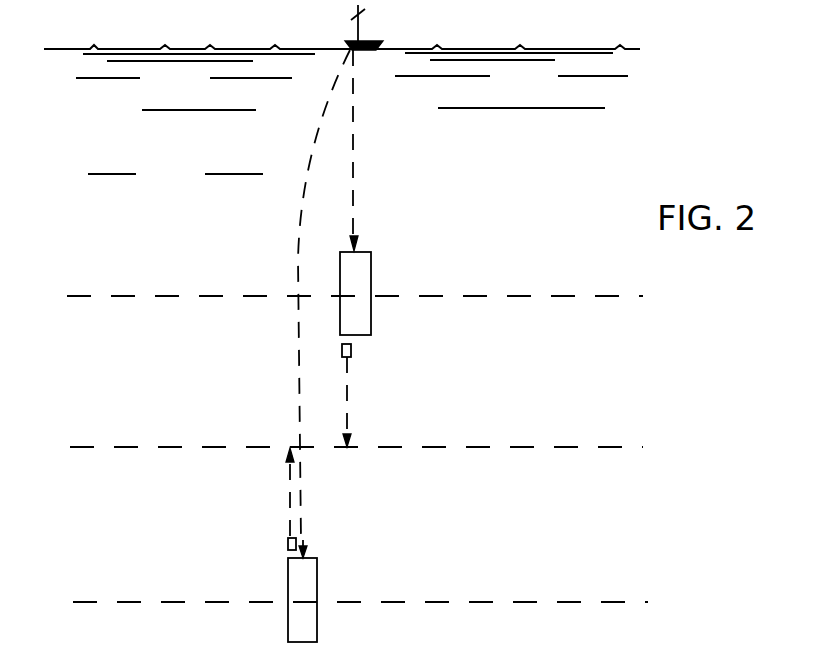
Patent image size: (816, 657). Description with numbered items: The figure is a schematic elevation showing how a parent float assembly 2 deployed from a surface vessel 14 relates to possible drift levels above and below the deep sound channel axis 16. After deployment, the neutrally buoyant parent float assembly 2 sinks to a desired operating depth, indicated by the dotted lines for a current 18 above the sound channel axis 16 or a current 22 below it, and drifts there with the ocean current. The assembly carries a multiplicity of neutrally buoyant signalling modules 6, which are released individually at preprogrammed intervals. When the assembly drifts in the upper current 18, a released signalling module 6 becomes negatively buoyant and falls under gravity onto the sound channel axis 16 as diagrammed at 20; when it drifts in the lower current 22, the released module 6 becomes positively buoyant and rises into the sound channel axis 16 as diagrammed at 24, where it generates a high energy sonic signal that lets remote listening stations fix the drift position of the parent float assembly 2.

The parent float assembly 2 is at (372, 252).
The signalling module 6 is at (351, 349).
The surface vessel 14 is at (384, 46).
The sound channel axis 16 is at (376, 445).
The current above the sound channel axis 18 is at (375, 294).
The downward movement path 20 is at (347, 392).
The current below the sound channel axis 22 is at (379, 601).
The upward movement path 24 is at (290, 492).